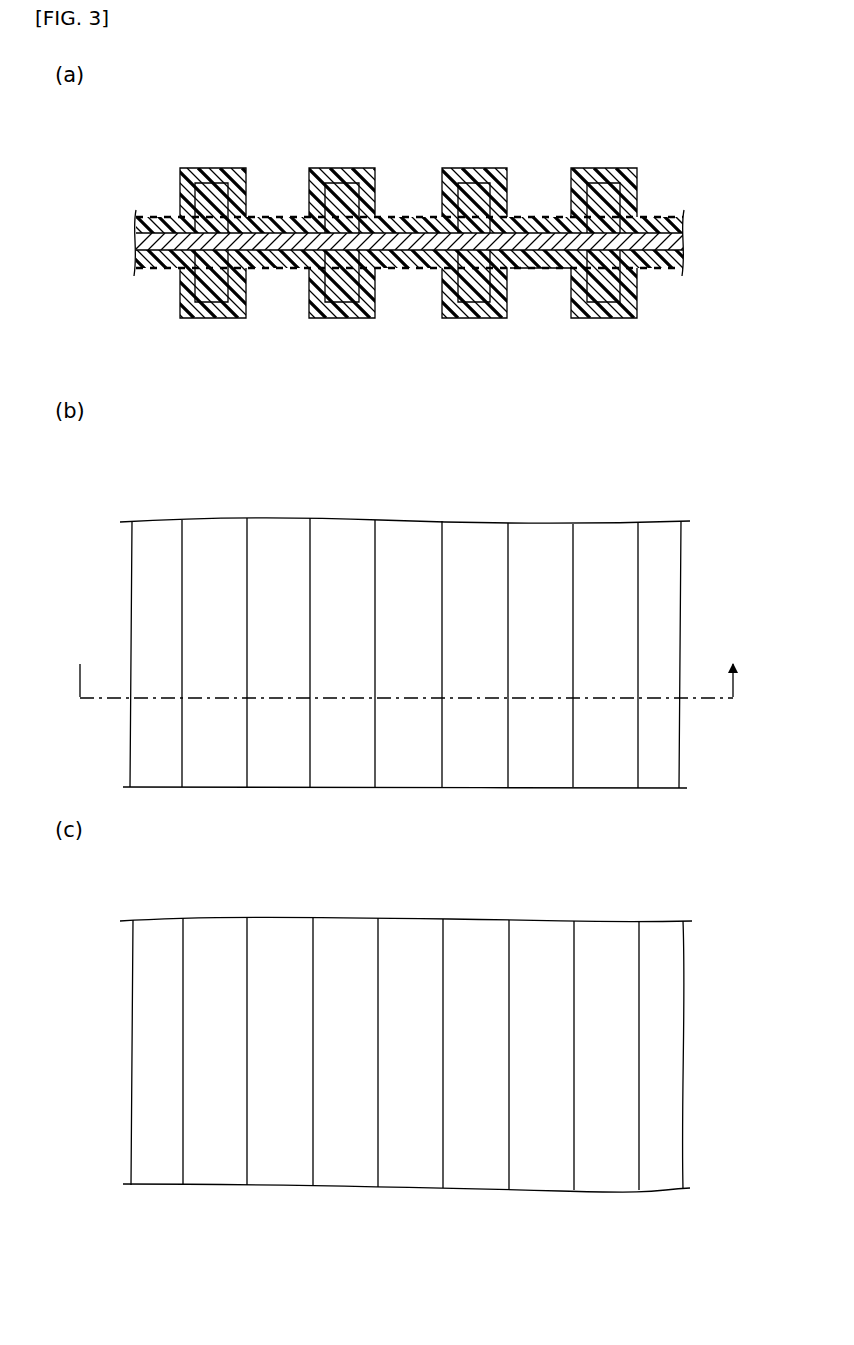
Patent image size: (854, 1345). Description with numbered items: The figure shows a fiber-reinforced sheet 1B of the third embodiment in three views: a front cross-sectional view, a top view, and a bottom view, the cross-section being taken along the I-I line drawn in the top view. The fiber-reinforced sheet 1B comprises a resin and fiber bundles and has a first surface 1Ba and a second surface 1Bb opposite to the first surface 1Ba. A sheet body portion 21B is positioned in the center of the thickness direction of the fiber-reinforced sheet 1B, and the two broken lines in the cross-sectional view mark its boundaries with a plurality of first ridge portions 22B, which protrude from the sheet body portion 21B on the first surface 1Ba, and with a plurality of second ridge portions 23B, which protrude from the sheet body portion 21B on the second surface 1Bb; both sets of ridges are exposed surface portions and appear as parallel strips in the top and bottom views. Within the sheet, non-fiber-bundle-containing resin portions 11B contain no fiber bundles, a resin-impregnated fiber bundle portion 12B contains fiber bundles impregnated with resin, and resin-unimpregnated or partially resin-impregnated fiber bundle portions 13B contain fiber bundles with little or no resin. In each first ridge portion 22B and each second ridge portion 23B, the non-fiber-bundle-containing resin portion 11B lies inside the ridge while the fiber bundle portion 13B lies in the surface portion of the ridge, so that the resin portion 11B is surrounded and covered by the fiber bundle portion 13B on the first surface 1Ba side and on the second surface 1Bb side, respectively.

The fiber-reinforced sheet 1B is at (151, 144).
The first surface 1Ba is at (205, 168).
The second surface 1Bb is at (217, 318).
The non-fiber-bundle-containing resin portion 11B is at (332, 167).
The resin-impregnated fiber bundle portion 12B is at (620, 295).
The resin-unimpregnated fiber bundle portion or partially resin-impregnated fiber bu 13B is at (407, 215).
The sheet body portion 21B is at (538, 270).
The first ridge portion 22B is at (478, 165).
The second ridge portion 23B is at (480, 318).